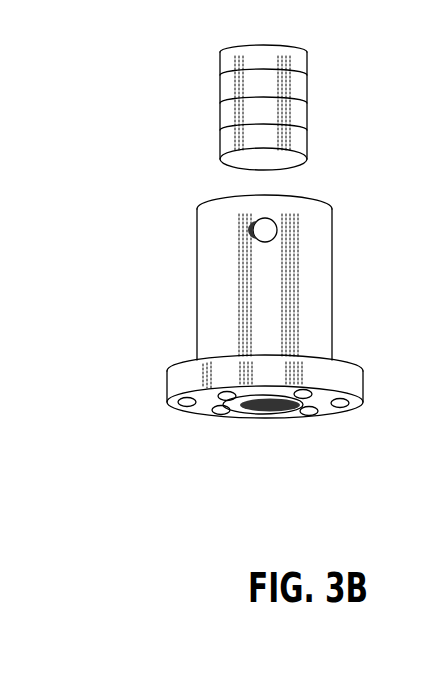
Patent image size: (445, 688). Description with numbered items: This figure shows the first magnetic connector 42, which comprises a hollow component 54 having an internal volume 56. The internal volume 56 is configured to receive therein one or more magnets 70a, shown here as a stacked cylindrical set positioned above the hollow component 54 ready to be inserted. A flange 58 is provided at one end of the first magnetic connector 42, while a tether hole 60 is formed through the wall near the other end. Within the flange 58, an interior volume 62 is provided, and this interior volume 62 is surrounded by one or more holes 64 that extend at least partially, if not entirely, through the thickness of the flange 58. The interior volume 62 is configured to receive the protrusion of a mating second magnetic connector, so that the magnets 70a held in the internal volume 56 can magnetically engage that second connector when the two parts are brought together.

The magnets 70a is at (273, 83).
The internal volume 56 is at (255, 319).
The first magnetic connector 42 is at (255, 326).
The hollow component 54 is at (320, 308).
The flange 58 is at (185, 383).
The tether hole 60 is at (267, 230).
The interior volume 62 is at (268, 406).
The holes 64 is at (180, 404).